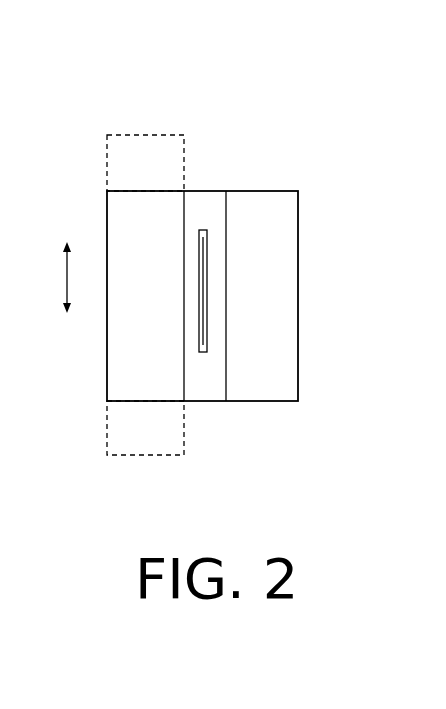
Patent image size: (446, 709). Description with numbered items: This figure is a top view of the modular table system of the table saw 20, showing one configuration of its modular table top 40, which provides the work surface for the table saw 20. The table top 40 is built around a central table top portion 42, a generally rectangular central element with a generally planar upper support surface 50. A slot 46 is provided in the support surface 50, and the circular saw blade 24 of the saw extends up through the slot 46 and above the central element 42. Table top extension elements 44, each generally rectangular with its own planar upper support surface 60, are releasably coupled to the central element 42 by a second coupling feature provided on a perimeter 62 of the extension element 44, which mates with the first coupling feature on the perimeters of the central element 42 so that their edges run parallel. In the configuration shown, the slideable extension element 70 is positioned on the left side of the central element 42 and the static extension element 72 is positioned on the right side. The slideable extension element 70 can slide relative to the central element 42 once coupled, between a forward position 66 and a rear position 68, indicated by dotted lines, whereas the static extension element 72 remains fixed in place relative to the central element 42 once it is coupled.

The table saw 20 is at (94, 119).
The circular saw blade 24 is at (207, 300).
The modular table top 40 is at (140, 340).
The central table top portion 42 is at (203, 204).
The table top extension elements 44 is at (163, 380).
The slot 46 is at (207, 337).
The upper support surface 50 is at (209, 228).
The upper support surface 60 is at (136, 272).
The perimeter 62 is at (298, 270).
The forward position 66 is at (133, 455).
The rear position 68 is at (137, 135).
The slideable extension element 70 is at (148, 222).
The static extension element 72 is at (253, 204).